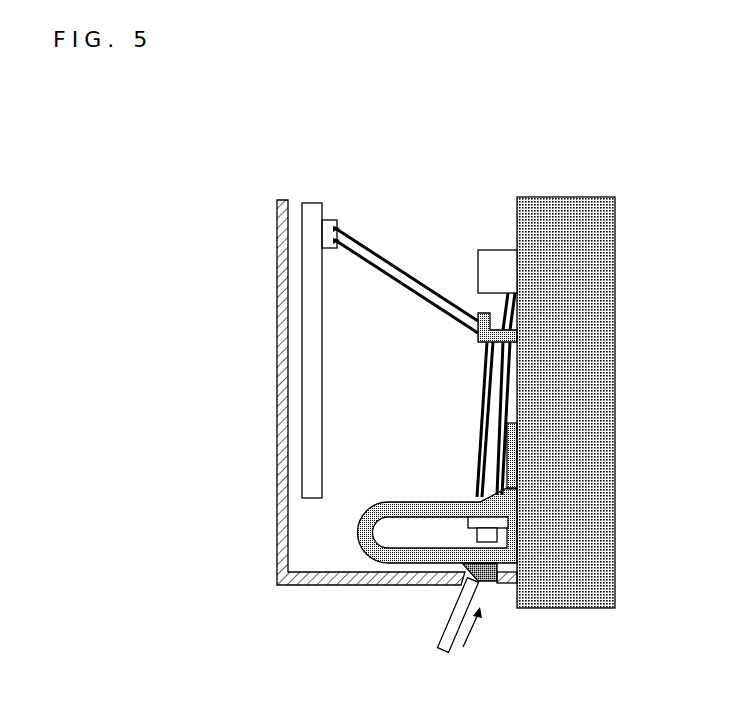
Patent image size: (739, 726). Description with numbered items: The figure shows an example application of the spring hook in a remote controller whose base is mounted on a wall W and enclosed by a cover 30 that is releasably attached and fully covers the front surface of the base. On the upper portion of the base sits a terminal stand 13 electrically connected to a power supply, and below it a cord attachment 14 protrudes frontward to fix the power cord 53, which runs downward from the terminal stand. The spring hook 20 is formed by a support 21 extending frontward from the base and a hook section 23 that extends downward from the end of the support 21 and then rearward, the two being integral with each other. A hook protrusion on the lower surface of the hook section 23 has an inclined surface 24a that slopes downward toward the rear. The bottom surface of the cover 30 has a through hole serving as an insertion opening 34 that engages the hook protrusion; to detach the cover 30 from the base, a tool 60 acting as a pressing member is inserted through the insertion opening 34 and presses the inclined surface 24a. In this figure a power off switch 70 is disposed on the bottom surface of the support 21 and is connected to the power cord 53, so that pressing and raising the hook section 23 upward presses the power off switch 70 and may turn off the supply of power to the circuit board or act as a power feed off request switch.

The wall W is at (578, 197).
The cover 30 is at (277, 280).
The terminal stand 13 is at (478, 272).
The cord attachment 14 is at (478, 336).
The power cord 53 is at (480, 412).
The spring hook 20 is at (410, 503).
The support 21 is at (493, 508).
The power off switch 70 is at (497, 533).
The hook section 23 is at (496, 566).
The inclined surface 24a is at (505, 578).
The tool 60 is at (450, 618).
The insertion opening 34 is at (485, 585).